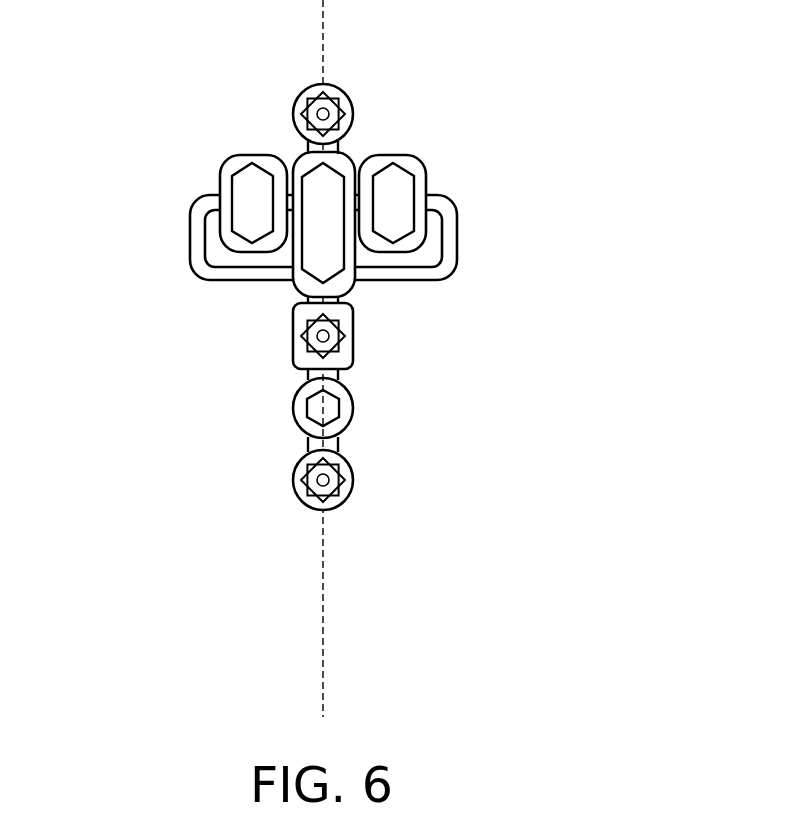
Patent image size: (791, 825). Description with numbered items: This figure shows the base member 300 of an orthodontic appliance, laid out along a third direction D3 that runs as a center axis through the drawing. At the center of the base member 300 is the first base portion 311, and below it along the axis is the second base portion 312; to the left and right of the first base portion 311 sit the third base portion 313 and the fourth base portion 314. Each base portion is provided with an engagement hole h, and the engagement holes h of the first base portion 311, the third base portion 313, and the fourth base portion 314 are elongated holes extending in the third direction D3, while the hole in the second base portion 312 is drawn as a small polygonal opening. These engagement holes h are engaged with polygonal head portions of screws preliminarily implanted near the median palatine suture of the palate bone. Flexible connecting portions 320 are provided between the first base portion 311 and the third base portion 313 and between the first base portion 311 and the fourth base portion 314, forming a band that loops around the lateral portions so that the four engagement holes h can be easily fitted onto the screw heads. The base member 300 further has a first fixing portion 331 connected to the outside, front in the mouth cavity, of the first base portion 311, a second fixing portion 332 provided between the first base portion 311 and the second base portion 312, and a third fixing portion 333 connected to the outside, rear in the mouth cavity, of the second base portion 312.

The base member 300 is at (481, 138).
The first base portion 311 is at (350, 252).
The second base portion 312 is at (343, 405).
The third base portion 313 is at (231, 170).
The fourth base portion 314 is at (403, 160).
The flexible connecting portion 320 is at (200, 252).
The first fixing portion 331 is at (296, 110).
The second fixing portion 332 is at (310, 347).
The third fixing portion 333 is at (297, 480).
The engagement hole h is at (243, 186).
The third direction D3 is at (327, 557).